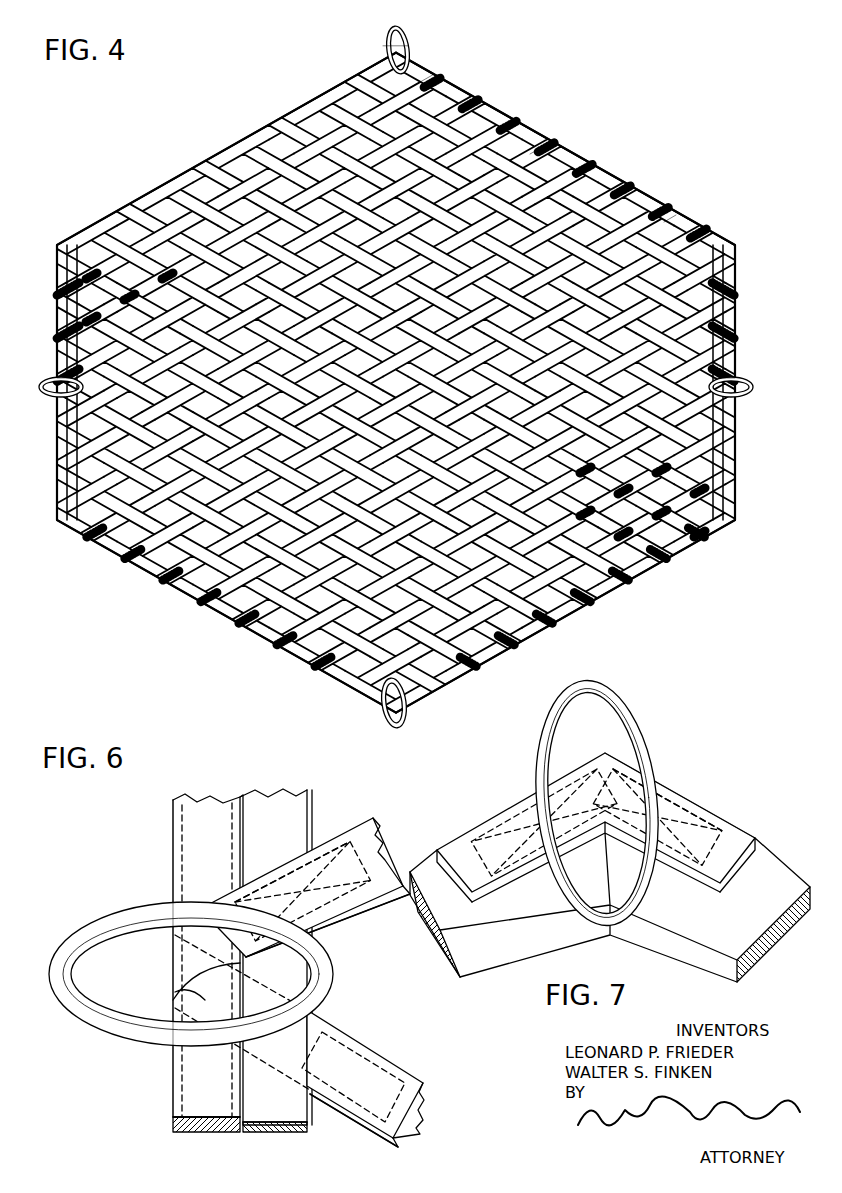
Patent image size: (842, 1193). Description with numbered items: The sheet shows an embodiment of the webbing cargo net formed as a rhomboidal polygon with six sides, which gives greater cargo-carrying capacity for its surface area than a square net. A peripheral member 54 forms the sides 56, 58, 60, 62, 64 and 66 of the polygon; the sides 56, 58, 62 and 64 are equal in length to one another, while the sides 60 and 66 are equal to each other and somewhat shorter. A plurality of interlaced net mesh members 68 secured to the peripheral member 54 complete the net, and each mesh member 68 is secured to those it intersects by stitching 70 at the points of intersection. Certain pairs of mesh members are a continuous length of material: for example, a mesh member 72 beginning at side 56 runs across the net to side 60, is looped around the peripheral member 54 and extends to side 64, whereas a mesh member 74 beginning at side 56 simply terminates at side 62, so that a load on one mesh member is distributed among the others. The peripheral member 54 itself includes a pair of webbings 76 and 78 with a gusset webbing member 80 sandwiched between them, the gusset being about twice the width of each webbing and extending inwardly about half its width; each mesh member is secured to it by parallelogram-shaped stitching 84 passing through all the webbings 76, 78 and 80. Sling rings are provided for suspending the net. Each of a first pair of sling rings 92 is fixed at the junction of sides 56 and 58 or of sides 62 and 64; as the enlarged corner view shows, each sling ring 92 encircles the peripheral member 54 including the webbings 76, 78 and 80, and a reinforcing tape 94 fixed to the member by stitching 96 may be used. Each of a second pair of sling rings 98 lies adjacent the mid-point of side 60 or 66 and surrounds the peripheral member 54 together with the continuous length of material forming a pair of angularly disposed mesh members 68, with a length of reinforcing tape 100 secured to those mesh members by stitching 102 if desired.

In FIG. 4, the peripheral member 54 is at (637, 179).
In FIG. 6, the peripheral member 54 is at (152, 843).
In FIG. 7, the peripheral member 54 is at (756, 823).
In FIG. 4, the side 56 is at (578, 160).
In FIG. 4, the side 58 is at (303, 110).
In FIG. 4, the side 60 is at (58, 275).
In FIG. 4, the side 62 is at (222, 612).
In FIG. 4, the side 64 is at (597, 598).
In FIG. 4, the side 66 is at (737, 372).
In FIG. 6, the side 66 is at (215, 810).
In FIG. 4, the net mesh member 68 is at (498, 125).
In FIG. 6, the net mesh member 68 is at (375, 835).
In FIG. 4, the stitching 70 is at (395, 405).
In FIG. 4, the mesh member 72 is at (540, 148).
In FIG. 4, the mesh member 74 is at (680, 213).
In FIG. 6, the webbing 76 is at (172, 1128).
In FIG. 7, the webbing 76 is at (765, 880).
In FIG. 6, the webbing 78 is at (208, 1134).
In FIG. 7, the webbing 78 is at (440, 945).
In FIG. 6, the gusset webbing member 80 is at (272, 1134).
In FIG. 7, the gusset webbing member 80 is at (748, 978).
In FIG. 4, the stitching 84 is at (705, 228).
In FIG. 4, the sling ring 92 is at (415, 40).
In FIG. 7, the sling ring 92 is at (640, 714).
In FIG. 4, the reinforcing tape 94 is at (430, 64).
In FIG. 7, the reinforcing tape 94 is at (700, 822).
In FIG. 7, the stitching 96 is at (665, 796).
In FIG. 4, the sling ring 98 is at (40, 396).
In FIG. 6, the sling ring 98 is at (108, 925).
In FIG. 4, the reinforcing tape 100 is at (56, 380).
In FIG. 6, the reinforcing tape 100 is at (330, 920).
In FIG. 6, the stitching 102 is at (325, 850).